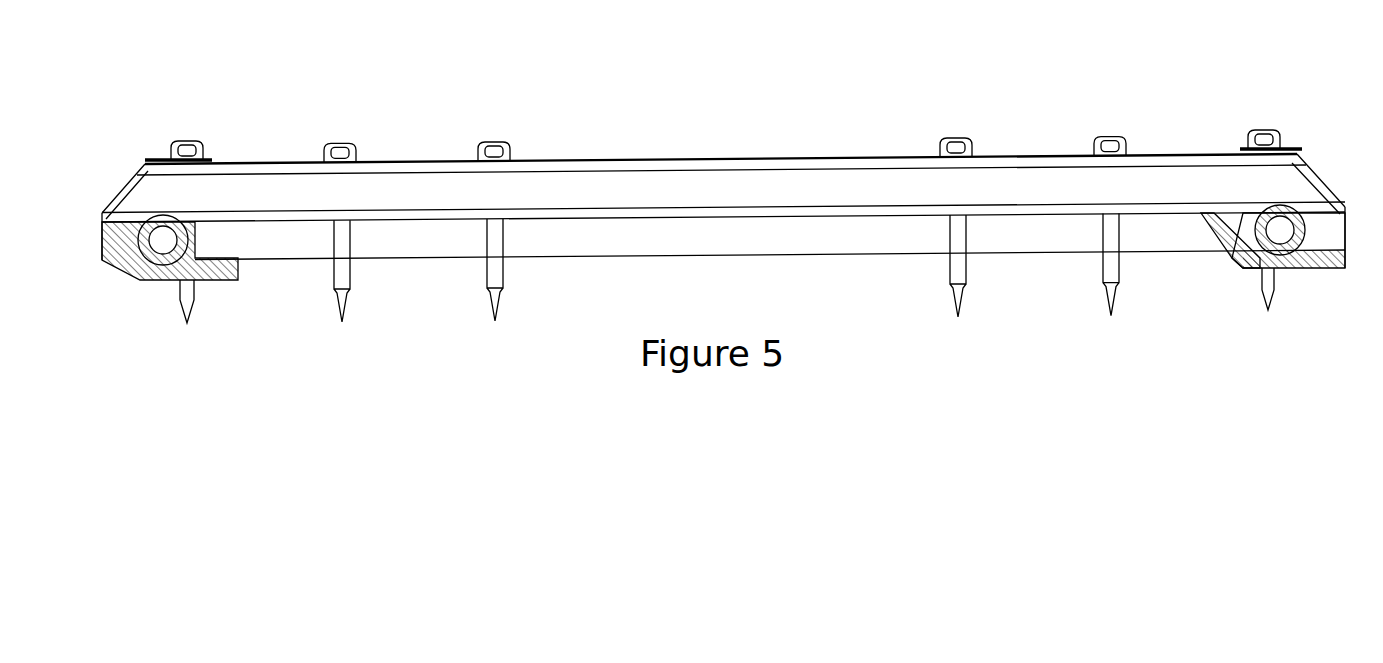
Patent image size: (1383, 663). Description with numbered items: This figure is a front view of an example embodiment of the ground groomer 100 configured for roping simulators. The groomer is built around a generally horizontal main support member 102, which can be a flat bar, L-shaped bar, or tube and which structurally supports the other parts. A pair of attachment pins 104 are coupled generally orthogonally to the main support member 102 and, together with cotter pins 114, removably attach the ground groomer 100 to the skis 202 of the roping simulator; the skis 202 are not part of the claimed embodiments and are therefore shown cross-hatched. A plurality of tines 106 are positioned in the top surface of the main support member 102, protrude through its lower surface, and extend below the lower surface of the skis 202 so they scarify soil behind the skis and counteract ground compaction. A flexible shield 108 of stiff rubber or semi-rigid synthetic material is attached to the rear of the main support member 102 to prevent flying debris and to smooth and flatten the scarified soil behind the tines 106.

The ground groomer 100 is at (478, 50).
The main support member 102 is at (707, 185).
The attachment pins 104 is at (190, 143).
The tines 106 is at (487, 288).
The flexible shield 108 is at (670, 247).
The cotter pins 114 is at (150, 158).
The skis 202 is at (155, 283).